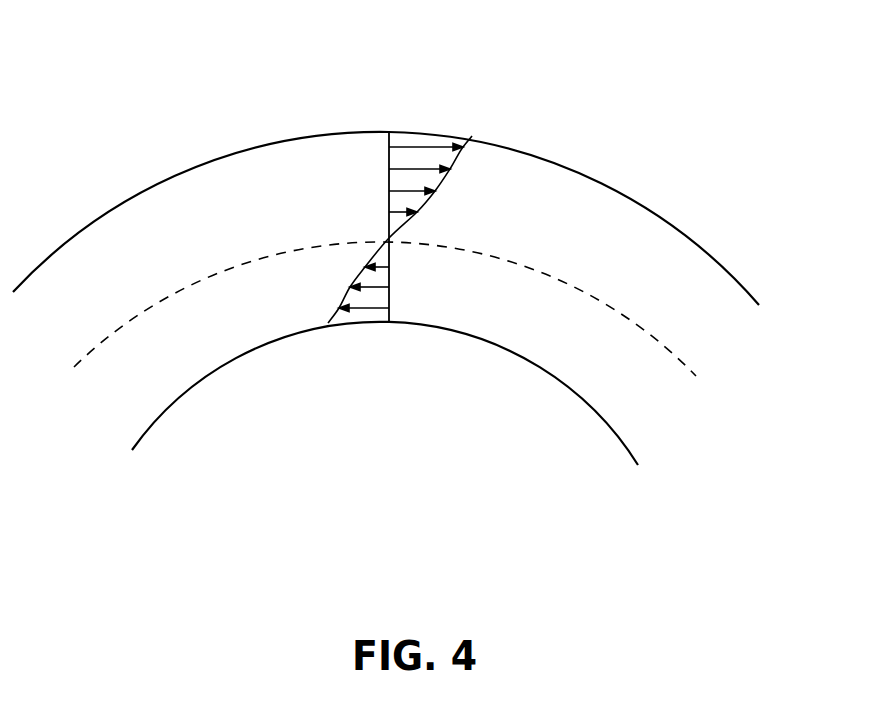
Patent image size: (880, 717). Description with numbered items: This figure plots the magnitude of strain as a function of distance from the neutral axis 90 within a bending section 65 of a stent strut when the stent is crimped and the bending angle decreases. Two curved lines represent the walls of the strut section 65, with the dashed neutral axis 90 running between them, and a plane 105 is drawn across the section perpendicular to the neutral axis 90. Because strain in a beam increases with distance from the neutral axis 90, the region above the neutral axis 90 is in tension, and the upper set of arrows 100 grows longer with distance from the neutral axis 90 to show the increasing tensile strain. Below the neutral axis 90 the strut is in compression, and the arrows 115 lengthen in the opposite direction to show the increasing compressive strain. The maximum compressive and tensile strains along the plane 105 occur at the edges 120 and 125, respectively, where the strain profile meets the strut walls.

The section 65 is at (616, 526).
The neutral axis 90 is at (493, 253).
The outer flow velocity vectors 100 is at (397, 200).
The plane 105 is at (389, 156).
The arrows 115 is at (378, 293).
The edge 120 is at (390, 323).
The edge 125 is at (388, 133).